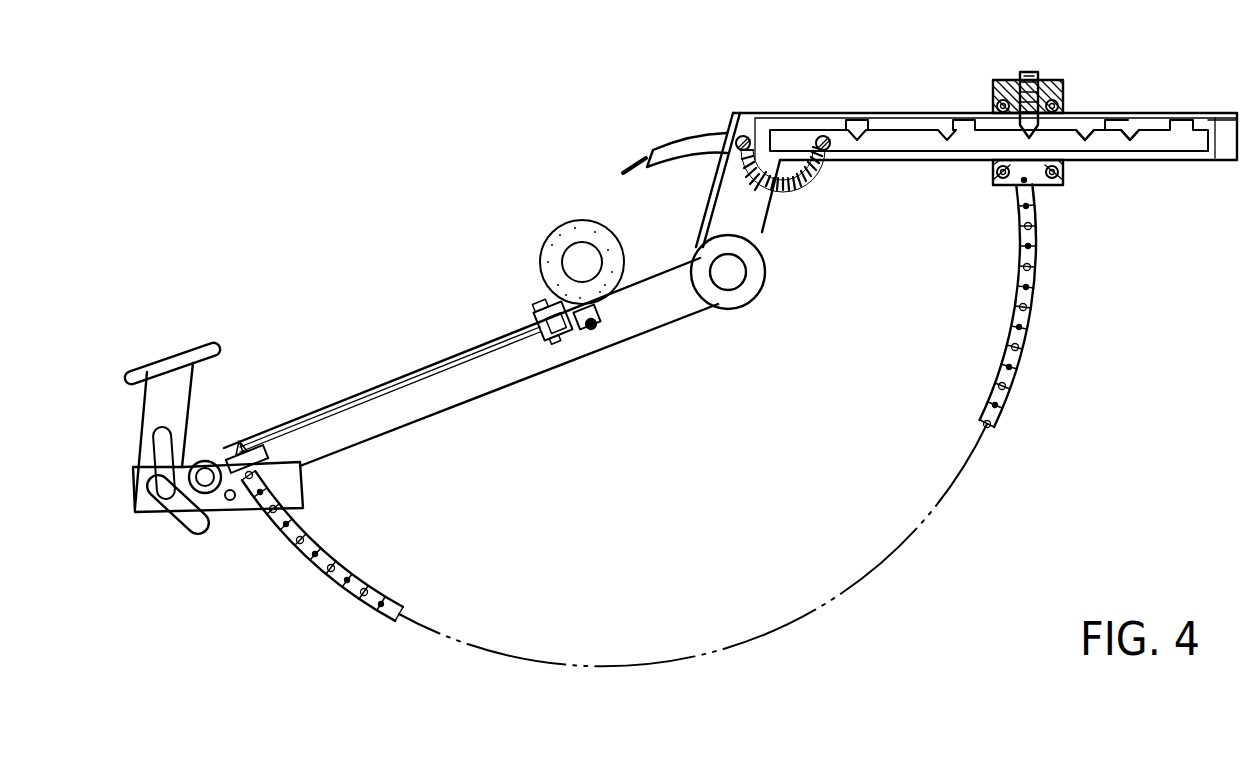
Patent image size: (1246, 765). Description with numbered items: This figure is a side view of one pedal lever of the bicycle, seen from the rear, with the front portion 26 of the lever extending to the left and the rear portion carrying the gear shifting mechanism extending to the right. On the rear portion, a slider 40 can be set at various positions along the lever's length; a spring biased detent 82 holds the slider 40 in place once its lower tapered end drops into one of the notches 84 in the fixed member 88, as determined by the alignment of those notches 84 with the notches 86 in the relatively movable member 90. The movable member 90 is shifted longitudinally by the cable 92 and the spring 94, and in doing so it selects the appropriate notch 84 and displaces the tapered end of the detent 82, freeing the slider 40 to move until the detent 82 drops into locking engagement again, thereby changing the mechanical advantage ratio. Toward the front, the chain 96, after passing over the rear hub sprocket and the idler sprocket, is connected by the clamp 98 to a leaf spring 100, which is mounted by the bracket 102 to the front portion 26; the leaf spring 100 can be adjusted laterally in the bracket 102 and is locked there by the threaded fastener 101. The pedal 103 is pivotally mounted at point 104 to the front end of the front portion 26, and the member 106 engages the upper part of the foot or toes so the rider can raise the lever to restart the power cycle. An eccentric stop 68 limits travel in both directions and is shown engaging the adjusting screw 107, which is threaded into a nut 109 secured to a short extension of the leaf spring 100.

The front portion of the pedal lever 26 is at (532, 353).
The slider 40 is at (1048, 115).
The eccentric stop 68 is at (545, 262).
The spring biased detent 82 is at (1060, 135).
The notches 84 is at (1180, 117).
The notches 86 is at (1083, 136).
The fixed member 88 is at (763, 132).
The movable member 90 is at (1195, 145).
The cable 92 is at (623, 172).
The spring 94 is at (810, 180).
The chain 96 is at (380, 578).
The clamp 98 is at (238, 450).
The leaf spring 100 is at (343, 413).
The threaded fastener 101 is at (538, 307).
The bracket 102 is at (563, 338).
The pedal 103 is at (210, 498).
The pivot point 104 is at (207, 462).
The foot-engaging member 106 is at (150, 365).
The adjusting screw 107 is at (605, 312).
The nut 109 is at (600, 318).